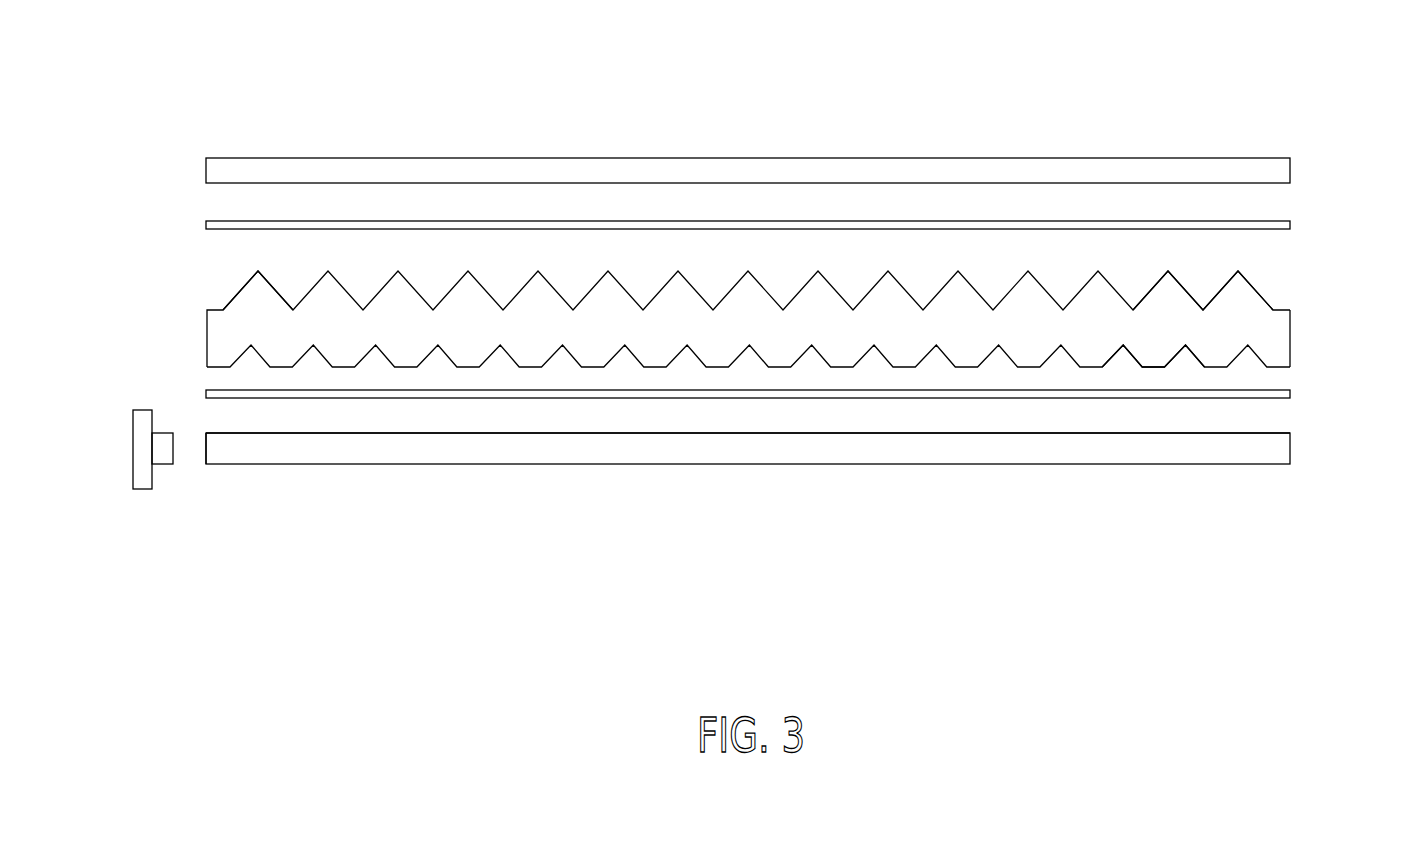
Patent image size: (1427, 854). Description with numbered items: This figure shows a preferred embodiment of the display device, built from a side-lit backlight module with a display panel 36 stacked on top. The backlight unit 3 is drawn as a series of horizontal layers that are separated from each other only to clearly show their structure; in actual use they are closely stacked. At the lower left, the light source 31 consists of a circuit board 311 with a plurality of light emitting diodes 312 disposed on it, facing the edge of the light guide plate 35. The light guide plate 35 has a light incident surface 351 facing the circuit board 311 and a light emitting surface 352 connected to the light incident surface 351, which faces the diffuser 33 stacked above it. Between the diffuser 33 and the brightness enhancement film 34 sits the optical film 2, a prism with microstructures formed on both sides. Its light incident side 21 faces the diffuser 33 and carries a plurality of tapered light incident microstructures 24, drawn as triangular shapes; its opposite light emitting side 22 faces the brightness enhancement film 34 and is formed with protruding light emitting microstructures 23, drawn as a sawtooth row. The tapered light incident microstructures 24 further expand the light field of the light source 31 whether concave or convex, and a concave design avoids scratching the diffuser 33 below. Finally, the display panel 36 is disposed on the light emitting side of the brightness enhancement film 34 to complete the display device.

The backlight unit 3 is at (1005, 147).
The display panel 36 is at (1270, 158).
The brightness enhancement film 34 is at (203, 218).
The optical film 2 is at (817, 323).
The light emitting side 22 is at (1283, 305).
The light emitting microstructures 23 is at (1183, 287).
The light incident side 21 is at (1283, 367).
The light incident microstructures 24 is at (1103, 365).
The diffuser 33 is at (205, 392).
The light guide plate 35 is at (750, 423).
The light incident surface 351 is at (200, 450).
The light emitting surface 352 is at (206, 433).
The light source 31 is at (172, 495).
The circuit board 311 is at (147, 489).
The light emitting diodes 312 is at (137, 493).